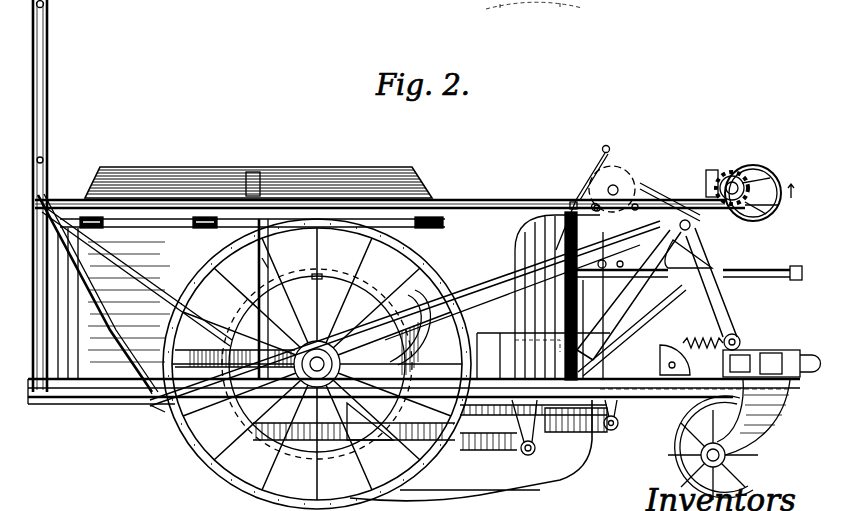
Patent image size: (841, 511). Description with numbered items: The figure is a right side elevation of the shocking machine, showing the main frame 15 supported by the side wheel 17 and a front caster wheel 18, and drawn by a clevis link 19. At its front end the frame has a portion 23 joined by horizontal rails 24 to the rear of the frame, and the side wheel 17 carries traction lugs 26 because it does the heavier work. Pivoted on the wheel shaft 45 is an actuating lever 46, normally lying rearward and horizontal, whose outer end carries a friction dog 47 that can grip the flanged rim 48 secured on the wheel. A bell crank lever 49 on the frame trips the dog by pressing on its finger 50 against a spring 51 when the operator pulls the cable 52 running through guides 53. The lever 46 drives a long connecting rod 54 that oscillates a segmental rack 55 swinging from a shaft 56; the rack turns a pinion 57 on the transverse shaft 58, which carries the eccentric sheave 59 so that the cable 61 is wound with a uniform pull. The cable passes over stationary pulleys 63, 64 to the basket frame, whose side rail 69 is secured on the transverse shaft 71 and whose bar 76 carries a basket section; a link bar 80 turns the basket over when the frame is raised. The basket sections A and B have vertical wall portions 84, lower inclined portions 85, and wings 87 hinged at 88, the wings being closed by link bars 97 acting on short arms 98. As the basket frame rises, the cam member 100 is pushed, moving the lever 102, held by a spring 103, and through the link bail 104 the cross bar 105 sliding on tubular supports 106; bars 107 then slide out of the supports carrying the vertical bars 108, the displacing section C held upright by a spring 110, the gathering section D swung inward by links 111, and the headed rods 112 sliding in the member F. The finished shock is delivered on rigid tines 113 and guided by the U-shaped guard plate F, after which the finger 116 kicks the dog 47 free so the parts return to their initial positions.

The main frame 15 is at (630, 378).
The side wheel 17 is at (213, 482).
The front caster wheel 18 is at (770, 450).
The clevis link 19 is at (808, 377).
The front portion 23 is at (714, 170).
The horizontal rails 24 is at (492, 199).
The traction lugs 26 is at (48, 65).
The shaft 45 is at (317, 339).
The actuating lever 46 is at (213, 348).
The friction dog 47 is at (218, 413).
The flanged rim 48 is at (328, 273).
The bell crank lever 49 is at (157, 408).
The finger 50 is at (180, 430).
The spring 51 is at (143, 378).
The cable 52 is at (48, 108).
The guides 53 is at (48, 11).
The connecting rod 54 is at (485, 290).
The segmental rack 55 is at (666, 222).
The shaft 56 is at (740, 336).
The pinion 57 is at (716, 184).
The shaft 58 is at (736, 182).
The sheave 59 is at (780, 205).
The cable 61 is at (493, 310).
The pulley 63 is at (626, 176).
The pulley 64 is at (368, 460).
The side rail 69 is at (540, 453).
The transverse shaft 71 is at (628, 405).
The bar 76 is at (270, 257).
The link bar 80 is at (500, 460).
The vertical wall portion 84 is at (78, 300).
The lower inclined portion 85 is at (80, 350).
The wing 87 is at (414, 181).
The hinge 88 is at (200, 229).
The link bar 97 is at (235, 285).
The short arm 98 is at (255, 250).
The cam member 100 is at (652, 390).
The lever 102 is at (690, 312).
The spring 103 is at (688, 304).
The link bail 104 is at (665, 260).
The cross bar 105 is at (640, 280).
The tubular support 106 is at (753, 267).
The bar 107 is at (787, 274).
The vertical bar 108 is at (580, 220).
The spring 110 is at (632, 306).
The link 111 is at (586, 254).
The headed rod 112 is at (633, 402).
The tines 113 is at (518, 490).
The finger 116 is at (398, 300).
The basket side section A is at (445, 243).
The basket side section B is at (669, 355).
The displacing section C is at (609, 148).
The gathering section D is at (535, 240).
The guard plate F is at (543, 297).